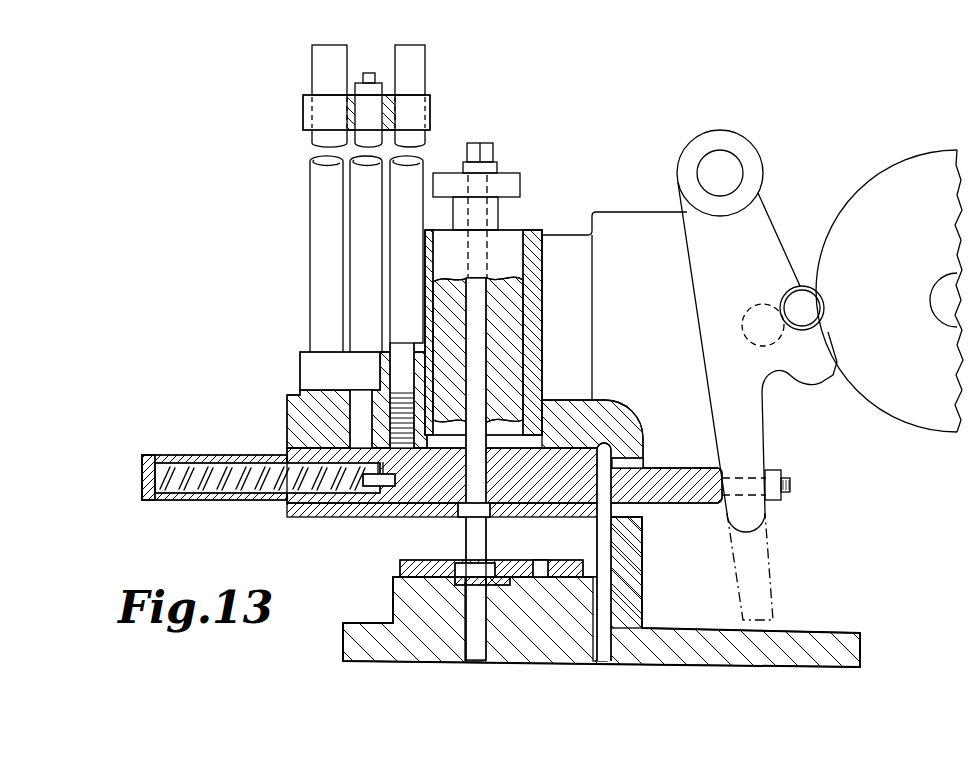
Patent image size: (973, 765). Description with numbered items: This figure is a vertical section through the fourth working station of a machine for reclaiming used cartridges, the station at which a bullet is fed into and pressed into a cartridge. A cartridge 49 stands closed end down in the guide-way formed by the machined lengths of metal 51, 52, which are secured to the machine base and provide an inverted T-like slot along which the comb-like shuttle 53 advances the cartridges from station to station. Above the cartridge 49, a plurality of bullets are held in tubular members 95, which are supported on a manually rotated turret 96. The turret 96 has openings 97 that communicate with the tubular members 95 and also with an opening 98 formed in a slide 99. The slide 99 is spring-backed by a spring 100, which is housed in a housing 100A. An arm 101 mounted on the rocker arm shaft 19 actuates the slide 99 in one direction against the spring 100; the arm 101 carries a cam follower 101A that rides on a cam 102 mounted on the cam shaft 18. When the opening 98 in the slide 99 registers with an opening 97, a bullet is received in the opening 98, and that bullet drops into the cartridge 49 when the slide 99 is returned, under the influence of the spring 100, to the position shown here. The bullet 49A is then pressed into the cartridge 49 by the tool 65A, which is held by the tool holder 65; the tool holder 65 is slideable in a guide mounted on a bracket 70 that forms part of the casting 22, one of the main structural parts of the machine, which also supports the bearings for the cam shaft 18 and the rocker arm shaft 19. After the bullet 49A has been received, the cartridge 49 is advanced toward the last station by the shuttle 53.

The cam shaft 18 is at (938, 287).
The rocker arm shaft 19 is at (720, 173).
The casting 22 is at (810, 632).
The cartridge 49 is at (488, 542).
The bullet 49A is at (462, 515).
The length of metal 51 is at (400, 567).
The length of metal 52 is at (612, 562).
The shuttle 53 is at (530, 560).
The tool holder 65 is at (524, 292).
The tool 65A is at (490, 348).
The bracket 70 is at (632, 418).
The tubular members 95 is at (428, 62).
The turret 96 is at (296, 400).
The openings 97 is at (416, 412).
The opening 98 is at (488, 486).
The slide 99 is at (386, 503).
The spring 100 is at (178, 460).
The housing 100A is at (140, 500).
The arm 101 is at (752, 440).
The cam follower 101A is at (786, 296).
The cam 102 is at (905, 158).